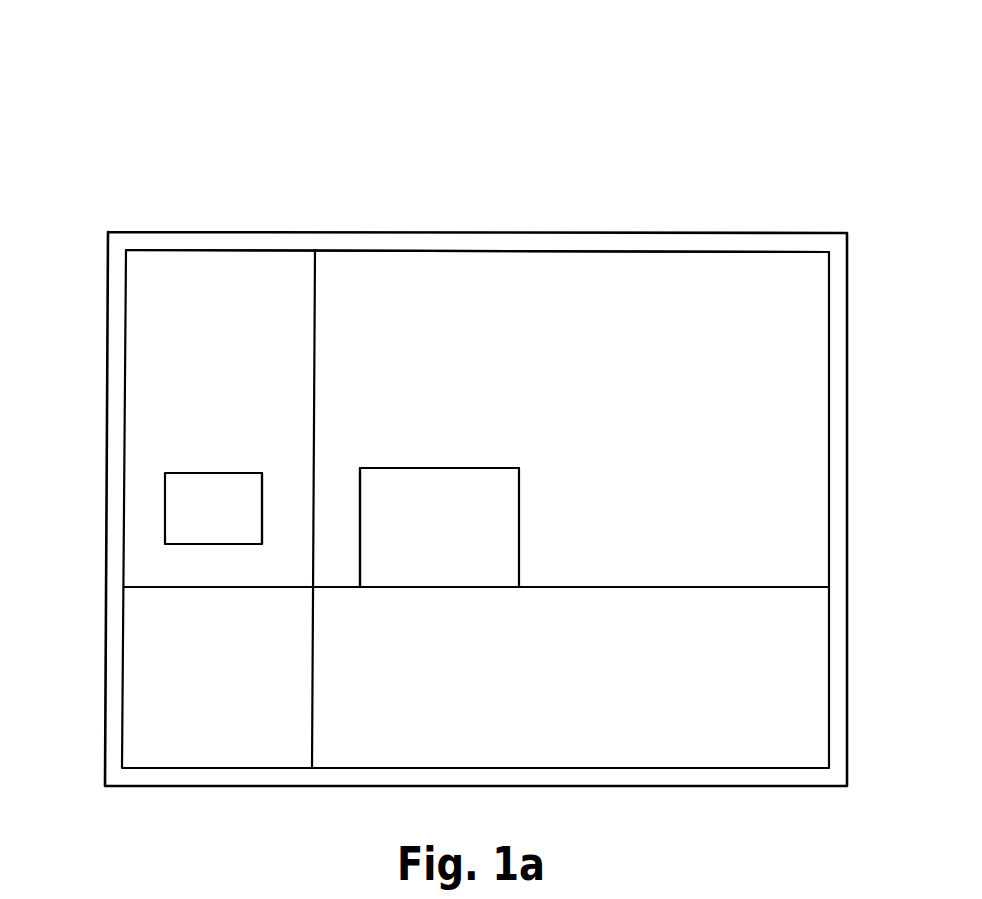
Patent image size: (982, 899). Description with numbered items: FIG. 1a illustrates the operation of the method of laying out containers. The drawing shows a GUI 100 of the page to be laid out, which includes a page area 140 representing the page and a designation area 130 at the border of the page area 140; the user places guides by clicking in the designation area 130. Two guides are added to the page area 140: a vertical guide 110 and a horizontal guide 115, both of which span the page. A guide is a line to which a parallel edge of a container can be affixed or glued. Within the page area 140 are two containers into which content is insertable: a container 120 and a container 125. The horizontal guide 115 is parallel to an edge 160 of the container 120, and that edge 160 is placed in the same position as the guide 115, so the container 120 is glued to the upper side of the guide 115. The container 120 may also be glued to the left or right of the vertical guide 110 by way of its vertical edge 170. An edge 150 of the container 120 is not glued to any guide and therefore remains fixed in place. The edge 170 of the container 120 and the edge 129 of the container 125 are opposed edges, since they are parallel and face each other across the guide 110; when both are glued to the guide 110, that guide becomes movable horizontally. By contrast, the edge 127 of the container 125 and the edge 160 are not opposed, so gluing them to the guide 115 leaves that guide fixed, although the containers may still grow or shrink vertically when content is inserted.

The GUI 100 is at (353, 160).
The designation area 130 is at (350, 232).
The page area 140 is at (657, 252).
The vertical guide 110 is at (314, 392).
The horizontal guide 115 is at (697, 588).
The container 125 is at (215, 512).
The edge 129 is at (263, 525).
The edge 127 is at (207, 545).
The edge 150 is at (440, 468).
The container 120 is at (440, 528).
The vertical edge 170 is at (358, 513).
The edge 160 is at (440, 588).